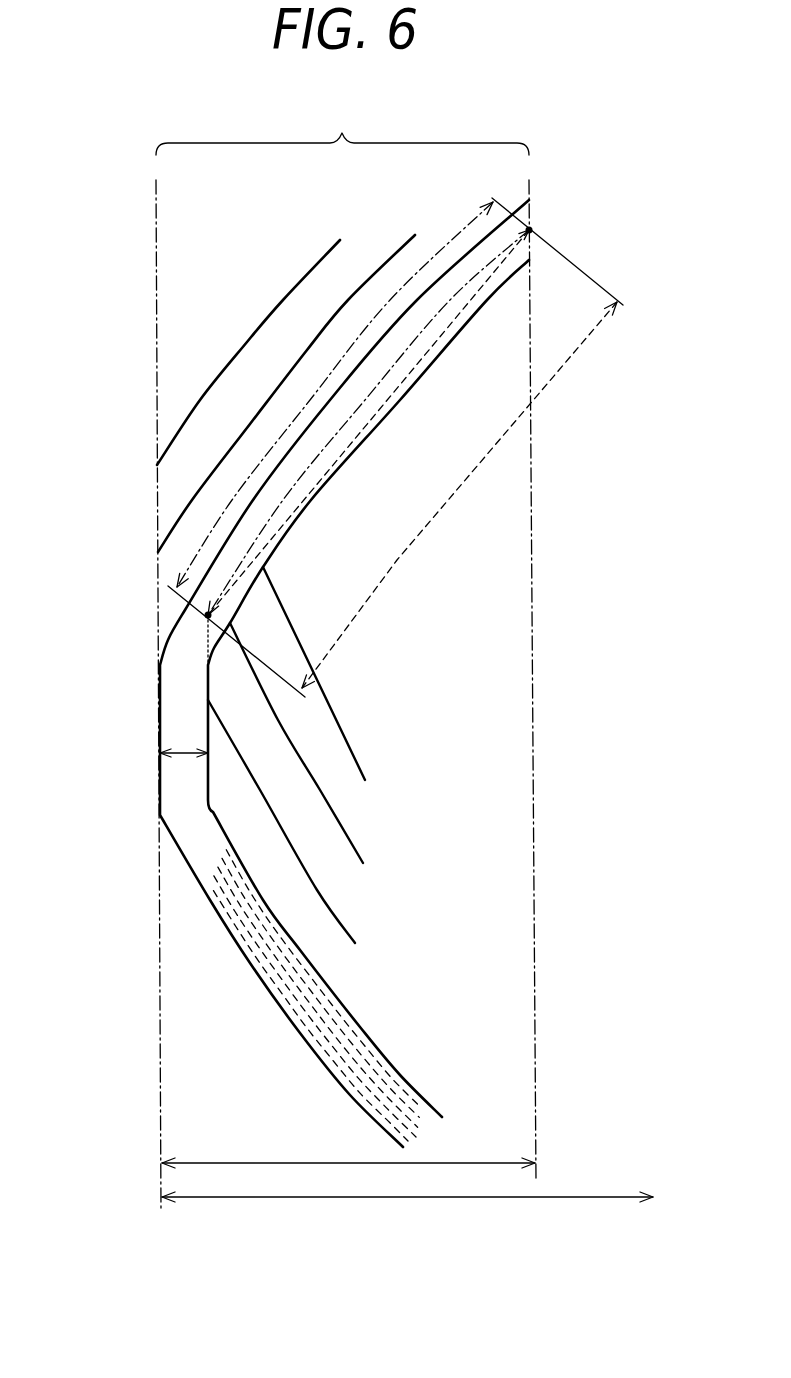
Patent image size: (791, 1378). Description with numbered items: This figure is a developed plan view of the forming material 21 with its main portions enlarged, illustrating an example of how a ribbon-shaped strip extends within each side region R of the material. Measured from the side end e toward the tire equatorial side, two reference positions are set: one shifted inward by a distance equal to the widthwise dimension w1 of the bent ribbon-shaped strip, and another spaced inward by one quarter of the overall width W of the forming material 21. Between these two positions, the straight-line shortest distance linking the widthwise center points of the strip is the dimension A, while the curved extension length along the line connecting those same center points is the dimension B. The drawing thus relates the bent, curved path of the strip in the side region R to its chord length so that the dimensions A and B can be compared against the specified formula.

The forming material 21 is at (157, 533).
The side end e is at (155, 225).
The linear shortest distance A is at (459, 495).
The curved extension length B is at (335, 394).
The side region R is at (342, 128).
The overall width W is at (407, 1165).
The widthwise dimension w1 is at (184, 740).